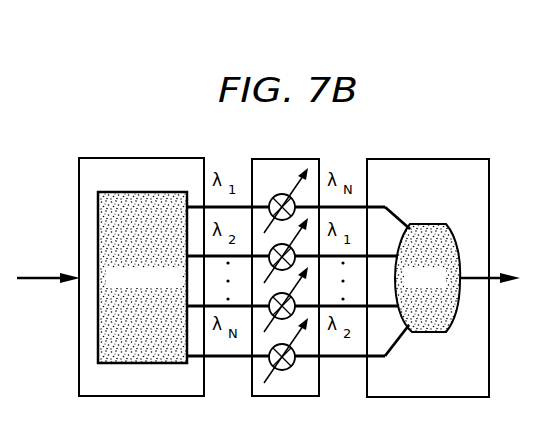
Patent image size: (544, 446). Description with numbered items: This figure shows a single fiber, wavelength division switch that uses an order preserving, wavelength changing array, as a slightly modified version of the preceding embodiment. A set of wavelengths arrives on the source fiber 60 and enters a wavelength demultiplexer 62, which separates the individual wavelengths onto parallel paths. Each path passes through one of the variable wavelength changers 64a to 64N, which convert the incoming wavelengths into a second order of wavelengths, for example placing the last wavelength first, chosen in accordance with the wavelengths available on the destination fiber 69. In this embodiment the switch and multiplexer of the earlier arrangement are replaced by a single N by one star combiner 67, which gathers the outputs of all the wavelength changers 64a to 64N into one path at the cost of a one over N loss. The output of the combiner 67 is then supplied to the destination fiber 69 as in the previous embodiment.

The source fiber 60 is at (46, 270).
The wavelength demultiplexer 62 is at (185, 158).
The variable wavelength changer 64a is at (279, 194).
The variable wavelength changer 64N is at (279, 371).
The N×1 star combiner 67 is at (425, 158).
The destination fiber 69 is at (500, 276).